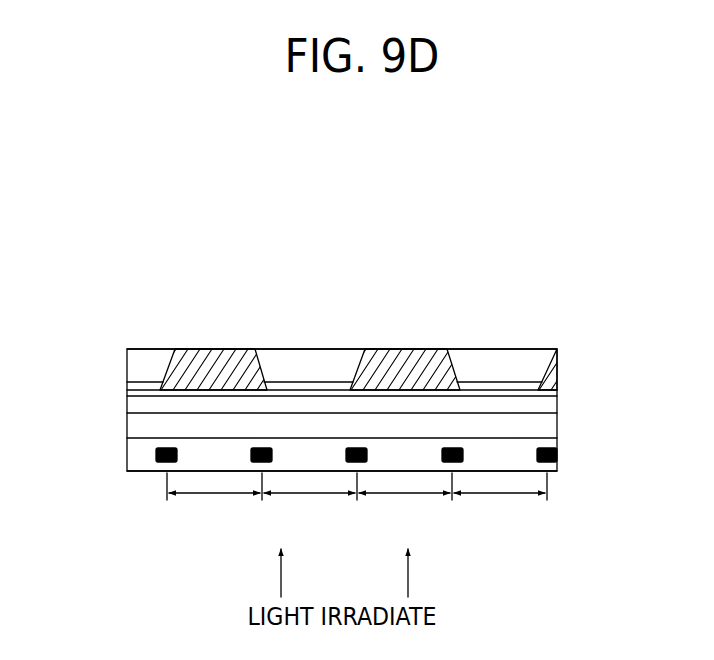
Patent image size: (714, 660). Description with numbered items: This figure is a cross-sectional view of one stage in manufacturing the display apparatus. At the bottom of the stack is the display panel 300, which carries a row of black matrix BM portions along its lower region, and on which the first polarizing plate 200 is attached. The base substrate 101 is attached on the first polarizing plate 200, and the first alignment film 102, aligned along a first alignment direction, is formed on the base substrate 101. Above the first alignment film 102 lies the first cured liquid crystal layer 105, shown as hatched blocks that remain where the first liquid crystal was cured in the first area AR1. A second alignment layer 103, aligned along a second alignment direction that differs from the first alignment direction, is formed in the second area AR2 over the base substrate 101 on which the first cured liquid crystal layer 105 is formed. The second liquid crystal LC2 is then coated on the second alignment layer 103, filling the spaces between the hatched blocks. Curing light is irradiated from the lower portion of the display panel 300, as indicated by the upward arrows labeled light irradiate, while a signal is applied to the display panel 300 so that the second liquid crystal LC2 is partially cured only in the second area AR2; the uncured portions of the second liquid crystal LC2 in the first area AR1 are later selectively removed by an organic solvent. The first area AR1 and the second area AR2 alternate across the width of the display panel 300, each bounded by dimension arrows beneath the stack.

The second alignment layer 103 is at (510, 382).
The second liquid crystal LC2 is at (518, 358).
The first cured liquid crystal layer 105 is at (556, 378).
The first alignment film 102 is at (556, 394).
The base substrate 101 is at (556, 406).
The first polarizing plate 200 is at (128, 423).
The black matrix BM is at (156, 451).
The display panel 300 is at (136, 460).
The first area AR1 is at (309, 497).
The second area AR2 is at (405, 497).